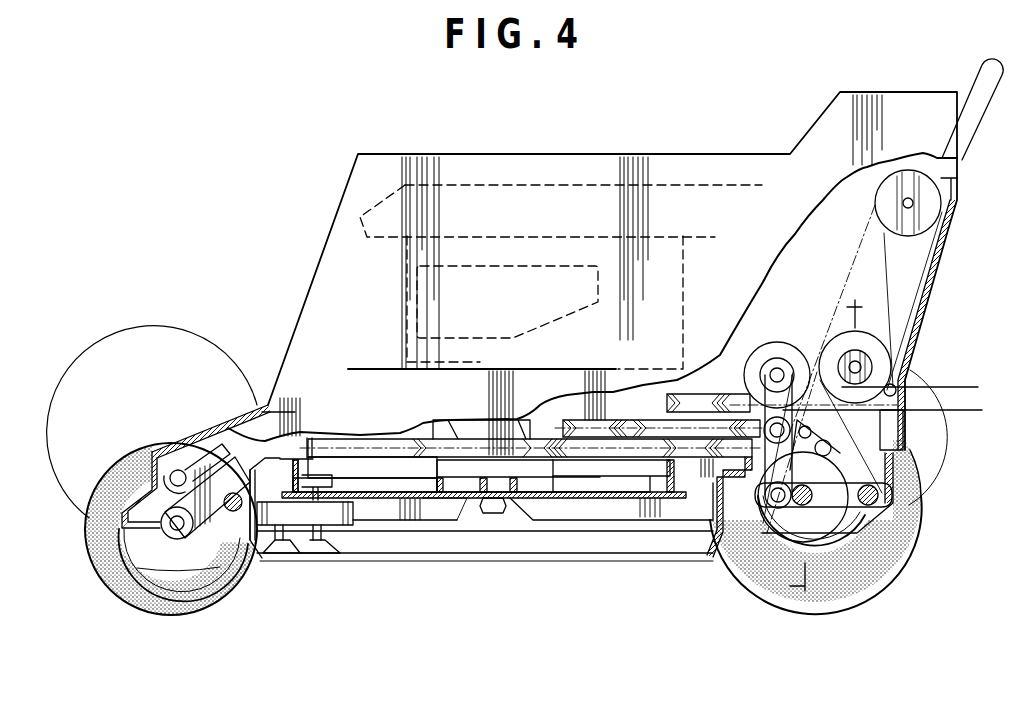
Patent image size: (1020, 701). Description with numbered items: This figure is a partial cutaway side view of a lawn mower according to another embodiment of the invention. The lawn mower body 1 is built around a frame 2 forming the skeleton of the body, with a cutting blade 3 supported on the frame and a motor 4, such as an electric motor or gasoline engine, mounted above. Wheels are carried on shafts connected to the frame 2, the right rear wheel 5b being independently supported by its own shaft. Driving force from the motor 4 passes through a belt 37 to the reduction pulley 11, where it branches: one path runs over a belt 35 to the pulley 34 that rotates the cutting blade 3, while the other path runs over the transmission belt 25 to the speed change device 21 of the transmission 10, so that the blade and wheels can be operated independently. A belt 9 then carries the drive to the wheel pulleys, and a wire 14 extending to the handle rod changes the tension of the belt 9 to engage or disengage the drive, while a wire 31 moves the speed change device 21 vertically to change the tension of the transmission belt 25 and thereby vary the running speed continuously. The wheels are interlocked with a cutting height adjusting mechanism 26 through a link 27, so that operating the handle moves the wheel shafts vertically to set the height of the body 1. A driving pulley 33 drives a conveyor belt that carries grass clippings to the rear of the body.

The lawn mower body 1 is at (663, 153).
The frame 2 is at (323, 380).
The cutting blade 3 is at (320, 556).
The motor 4 is at (500, 184).
The right rear wheel 5b is at (176, 616).
The belt 9 is at (848, 452).
The transmission 10 is at (682, 390).
The reduction pulley 11 is at (722, 395).
The wire 14 is at (960, 410).
The speed change device 21 is at (840, 325).
The transmission belt 25 is at (837, 421).
The cutting height adjusting mechanism 26 is at (201, 465).
The link 27 is at (195, 531).
The wire 31 is at (946, 387).
The driving pulley 33 is at (928, 201).
The pulley 34 is at (430, 439).
The belt 35 is at (605, 452).
The belt 37 is at (640, 421).